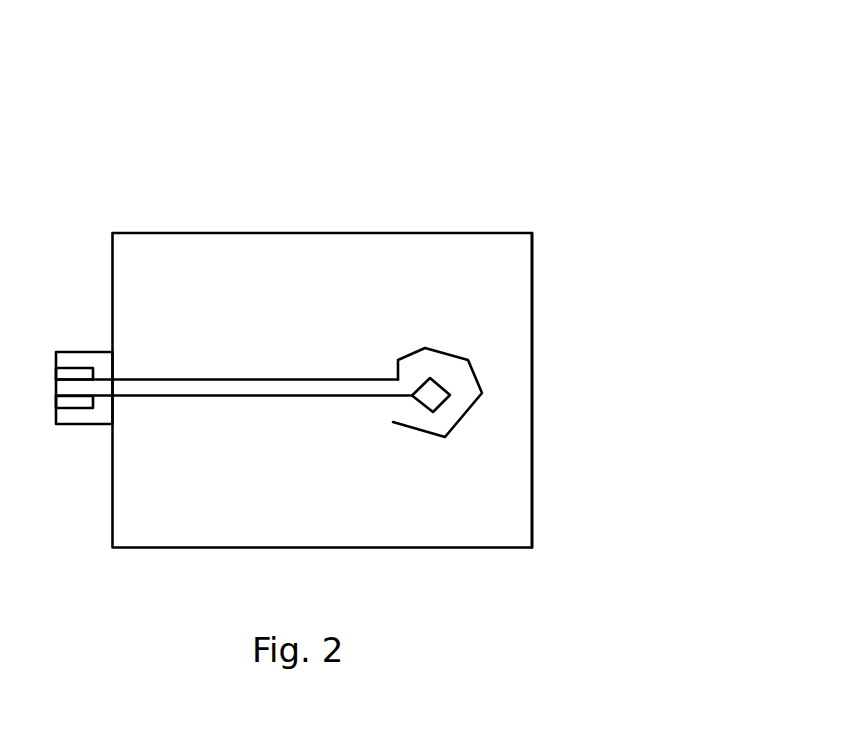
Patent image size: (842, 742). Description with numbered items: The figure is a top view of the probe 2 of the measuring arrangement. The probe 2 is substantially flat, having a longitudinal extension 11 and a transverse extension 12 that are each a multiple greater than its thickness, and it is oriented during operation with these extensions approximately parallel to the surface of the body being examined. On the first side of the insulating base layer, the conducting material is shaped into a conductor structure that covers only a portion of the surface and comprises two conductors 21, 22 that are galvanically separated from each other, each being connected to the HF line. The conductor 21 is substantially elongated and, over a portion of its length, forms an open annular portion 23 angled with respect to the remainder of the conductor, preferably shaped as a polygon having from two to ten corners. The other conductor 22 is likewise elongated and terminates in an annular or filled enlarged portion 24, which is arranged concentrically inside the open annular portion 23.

The probe 2 is at (545, 172).
The longitudinal extension 11 is at (465, 550).
The transverse extension 12 is at (533, 395).
The conductor 21 is at (243, 379).
The conductor 22 is at (211, 396).
The open annular portion 23 is at (450, 352).
The enlarged portion 24 is at (437, 407).